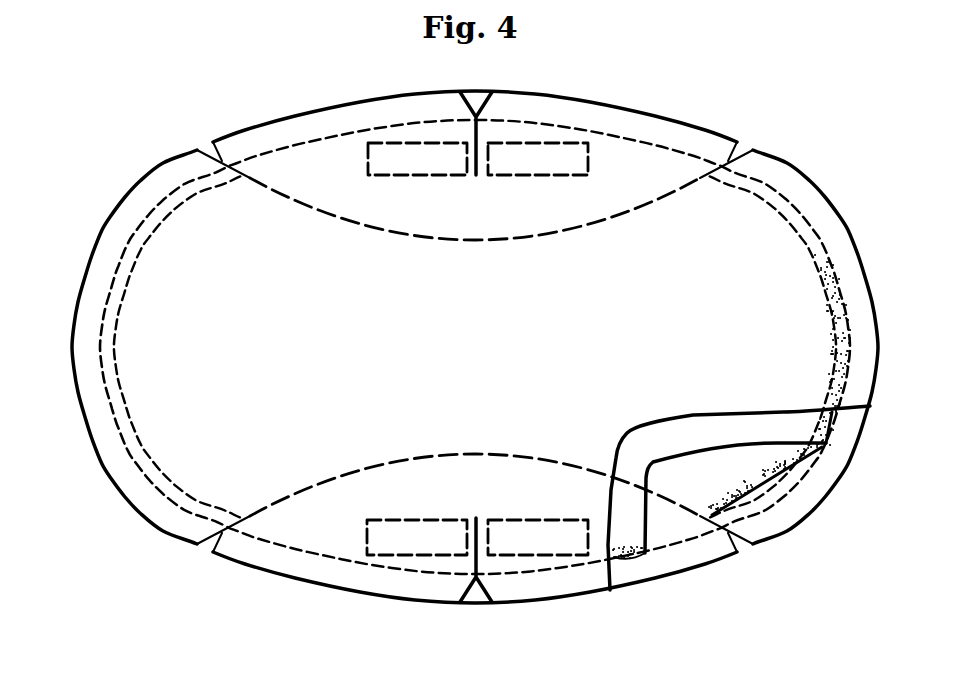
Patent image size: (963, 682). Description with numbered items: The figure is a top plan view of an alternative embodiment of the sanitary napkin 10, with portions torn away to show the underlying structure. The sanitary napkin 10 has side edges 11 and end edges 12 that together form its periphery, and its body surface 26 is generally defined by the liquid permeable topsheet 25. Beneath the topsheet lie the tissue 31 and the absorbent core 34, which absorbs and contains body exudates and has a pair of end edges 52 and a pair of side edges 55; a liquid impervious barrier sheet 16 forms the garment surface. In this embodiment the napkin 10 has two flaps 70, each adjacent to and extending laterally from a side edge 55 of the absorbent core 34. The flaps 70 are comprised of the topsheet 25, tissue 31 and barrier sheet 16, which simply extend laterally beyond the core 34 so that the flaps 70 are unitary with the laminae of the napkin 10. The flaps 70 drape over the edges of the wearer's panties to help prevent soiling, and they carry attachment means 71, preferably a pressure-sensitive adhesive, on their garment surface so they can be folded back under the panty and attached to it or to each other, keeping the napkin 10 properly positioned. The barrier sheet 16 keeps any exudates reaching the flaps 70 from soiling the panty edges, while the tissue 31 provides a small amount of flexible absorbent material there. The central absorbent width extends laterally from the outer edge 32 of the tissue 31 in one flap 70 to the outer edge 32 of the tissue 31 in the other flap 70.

The sanitary napkin 10 is at (757, 119).
The side edges 11 is at (362, 594).
The end edges 12 is at (82, 275).
The barrier sheet 16 is at (793, 503).
The topsheet 25 is at (201, 208).
The body surface 26 is at (228, 283).
The tissue 31 is at (640, 528).
The outer edge 32 is at (554, 123).
The absorbent core 34 is at (760, 463).
The end edges 52 is at (803, 455).
The side edges 55 is at (680, 508).
The flaps 70 is at (634, 147).
The attachment means 71 is at (527, 143).